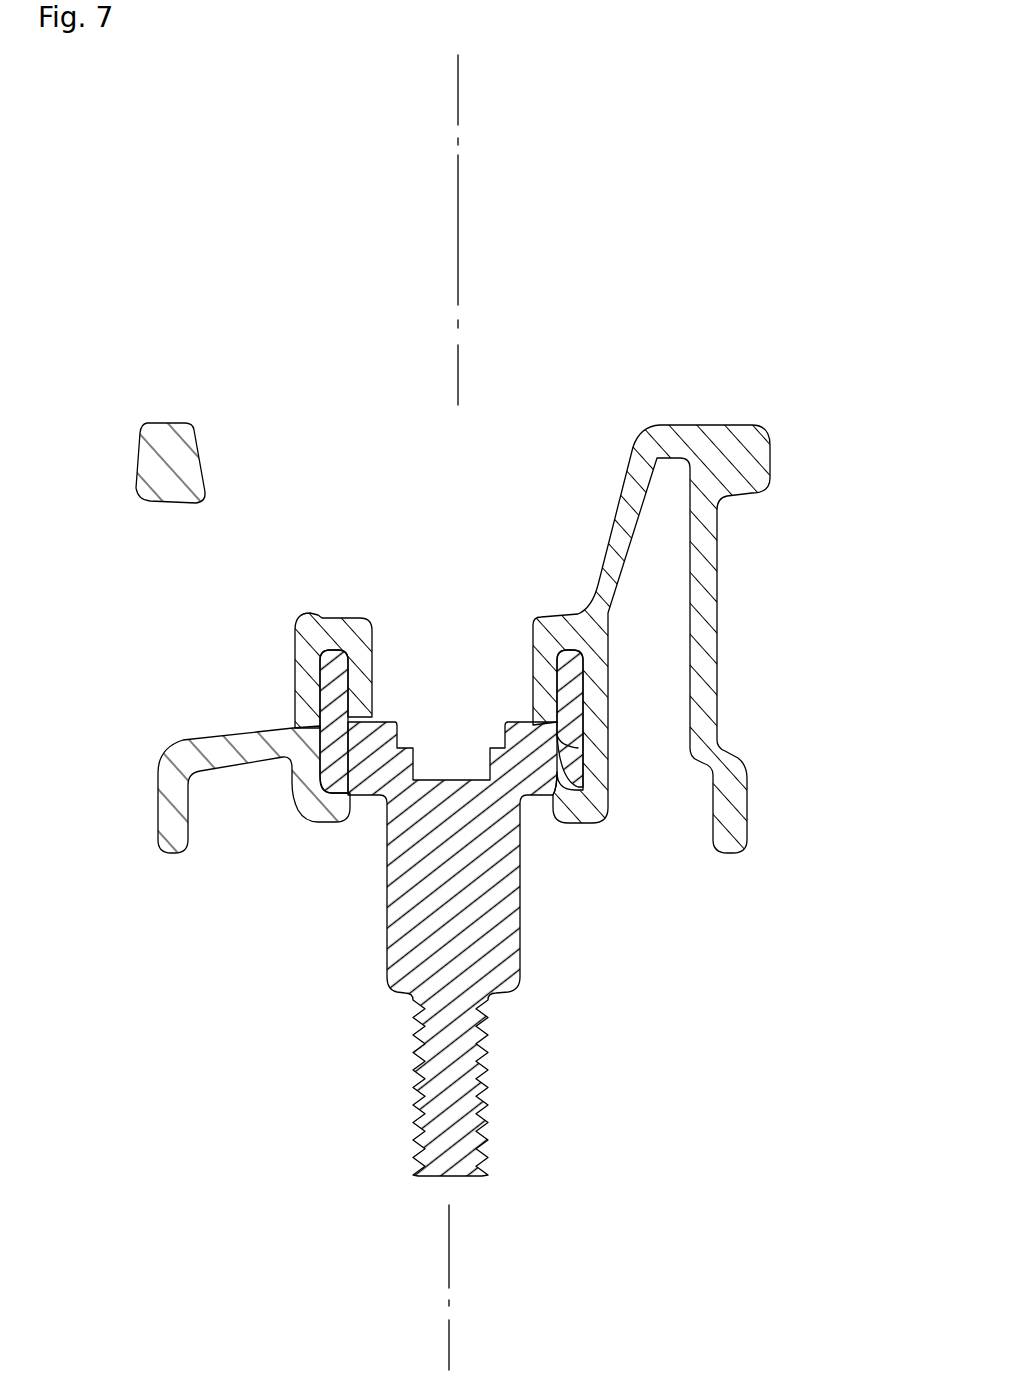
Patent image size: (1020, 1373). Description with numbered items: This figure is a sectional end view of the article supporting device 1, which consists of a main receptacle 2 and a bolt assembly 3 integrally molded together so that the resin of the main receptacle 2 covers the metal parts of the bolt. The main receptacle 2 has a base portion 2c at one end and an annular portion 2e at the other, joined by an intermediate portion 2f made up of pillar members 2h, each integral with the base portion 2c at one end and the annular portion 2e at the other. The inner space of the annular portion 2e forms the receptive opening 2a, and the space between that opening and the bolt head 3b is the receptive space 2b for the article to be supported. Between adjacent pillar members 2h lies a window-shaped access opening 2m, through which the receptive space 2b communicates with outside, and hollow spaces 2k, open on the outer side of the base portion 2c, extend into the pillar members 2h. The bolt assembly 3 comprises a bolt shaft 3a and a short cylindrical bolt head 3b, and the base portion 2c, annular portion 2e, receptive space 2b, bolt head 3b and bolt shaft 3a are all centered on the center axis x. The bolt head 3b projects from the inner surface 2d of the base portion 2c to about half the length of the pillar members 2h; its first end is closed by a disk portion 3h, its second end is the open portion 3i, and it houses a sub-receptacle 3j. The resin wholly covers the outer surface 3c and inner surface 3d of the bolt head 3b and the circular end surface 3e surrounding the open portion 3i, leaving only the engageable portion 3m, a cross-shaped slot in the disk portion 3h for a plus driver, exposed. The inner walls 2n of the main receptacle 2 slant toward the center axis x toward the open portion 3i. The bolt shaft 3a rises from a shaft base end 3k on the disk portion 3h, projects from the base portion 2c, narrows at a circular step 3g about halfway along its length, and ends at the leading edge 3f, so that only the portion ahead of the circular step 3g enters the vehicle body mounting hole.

The article supporting device 1 is at (688, 367).
The main receptacle 2 is at (485, 602).
The receptive opening 2a is at (256, 446).
The receptive space 2b is at (482, 500).
The base portion 2c is at (749, 812).
The inner surface of the base portion 2d is at (227, 735).
The annular portion 2e is at (767, 462).
The intermediate portion 2f is at (720, 590).
The pillar members 2h is at (720, 672).
The hollow spaces 2k is at (648, 735).
The access opening 2m is at (250, 570).
The inner walls 2n is at (612, 513).
The bolt assembly 3 is at (414, 818).
The bolt shaft 3a is at (413, 1068).
The bolt head 3b is at (408, 745).
The outer surface of the bolt head 3c is at (300, 694).
The inner surface of the bolt head 3d is at (373, 683).
The circular end surface 3e is at (570, 648).
The leading edge 3f is at (445, 1180).
The circular step 3g is at (497, 993).
The disk portion 3h is at (373, 797).
The open portion 3i is at (430, 640).
The sub-receptacle 3j is at (475, 719).
The shaft base end 3k is at (442, 797).
The engageable portion 3m is at (460, 757).
The center axis x is at (460, 207).